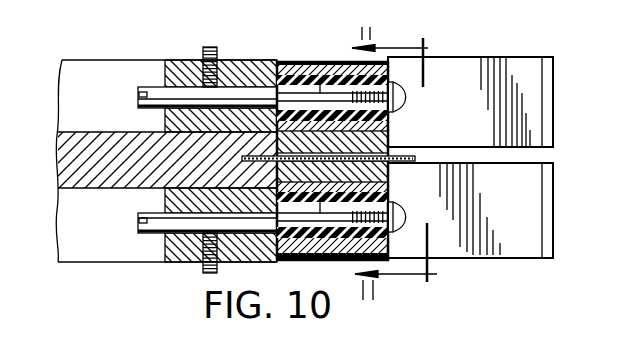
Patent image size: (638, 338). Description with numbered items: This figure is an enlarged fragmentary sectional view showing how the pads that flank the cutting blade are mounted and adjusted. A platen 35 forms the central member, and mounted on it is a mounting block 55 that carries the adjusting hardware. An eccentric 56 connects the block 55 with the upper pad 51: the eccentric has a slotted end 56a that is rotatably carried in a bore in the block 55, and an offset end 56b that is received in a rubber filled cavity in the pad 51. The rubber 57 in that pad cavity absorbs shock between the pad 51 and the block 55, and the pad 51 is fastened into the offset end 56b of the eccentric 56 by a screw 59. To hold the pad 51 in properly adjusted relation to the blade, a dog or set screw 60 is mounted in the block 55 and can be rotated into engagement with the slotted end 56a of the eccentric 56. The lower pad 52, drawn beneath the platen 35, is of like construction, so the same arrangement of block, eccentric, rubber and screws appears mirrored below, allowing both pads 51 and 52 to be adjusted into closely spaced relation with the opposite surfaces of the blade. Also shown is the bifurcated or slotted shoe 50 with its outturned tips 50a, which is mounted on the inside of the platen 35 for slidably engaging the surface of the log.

The platen 35 is at (70, 163).
The bifurcated or slotted shoe 50 is at (123, 252).
The outturned tips 50a is at (545, 103).
The upper pad 51 is at (352, 68).
The lower pad 52 is at (343, 260).
The mounting block 55 is at (233, 62).
The eccentric 56 is at (257, 93).
The slotted end 56a is at (184, 93).
The offset end 56b is at (305, 68).
The rubber 57 is at (294, 73).
The screw 59 is at (403, 103).
The dog or set screw 60 is at (199, 48).